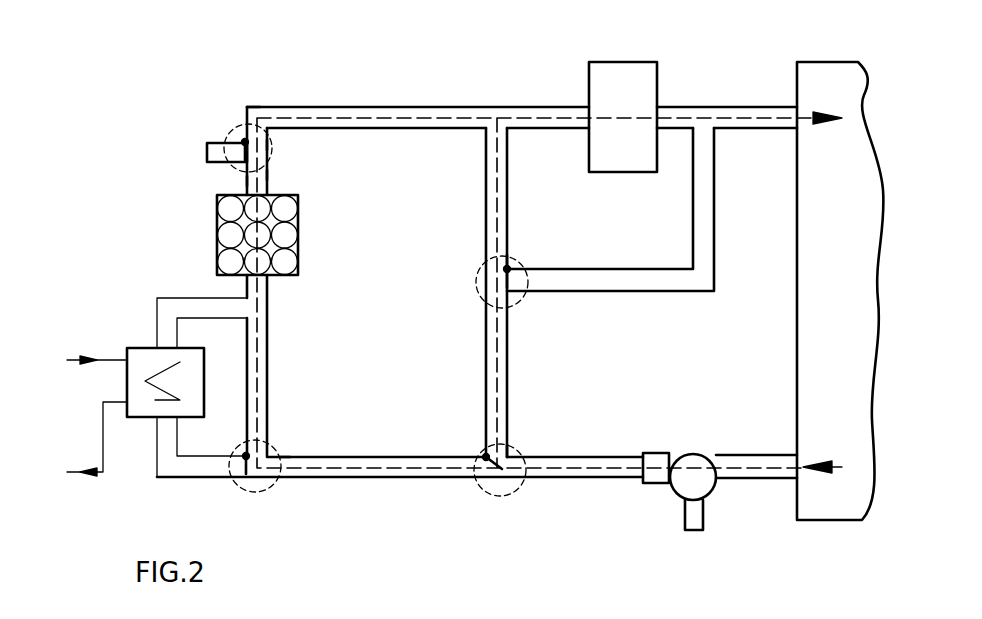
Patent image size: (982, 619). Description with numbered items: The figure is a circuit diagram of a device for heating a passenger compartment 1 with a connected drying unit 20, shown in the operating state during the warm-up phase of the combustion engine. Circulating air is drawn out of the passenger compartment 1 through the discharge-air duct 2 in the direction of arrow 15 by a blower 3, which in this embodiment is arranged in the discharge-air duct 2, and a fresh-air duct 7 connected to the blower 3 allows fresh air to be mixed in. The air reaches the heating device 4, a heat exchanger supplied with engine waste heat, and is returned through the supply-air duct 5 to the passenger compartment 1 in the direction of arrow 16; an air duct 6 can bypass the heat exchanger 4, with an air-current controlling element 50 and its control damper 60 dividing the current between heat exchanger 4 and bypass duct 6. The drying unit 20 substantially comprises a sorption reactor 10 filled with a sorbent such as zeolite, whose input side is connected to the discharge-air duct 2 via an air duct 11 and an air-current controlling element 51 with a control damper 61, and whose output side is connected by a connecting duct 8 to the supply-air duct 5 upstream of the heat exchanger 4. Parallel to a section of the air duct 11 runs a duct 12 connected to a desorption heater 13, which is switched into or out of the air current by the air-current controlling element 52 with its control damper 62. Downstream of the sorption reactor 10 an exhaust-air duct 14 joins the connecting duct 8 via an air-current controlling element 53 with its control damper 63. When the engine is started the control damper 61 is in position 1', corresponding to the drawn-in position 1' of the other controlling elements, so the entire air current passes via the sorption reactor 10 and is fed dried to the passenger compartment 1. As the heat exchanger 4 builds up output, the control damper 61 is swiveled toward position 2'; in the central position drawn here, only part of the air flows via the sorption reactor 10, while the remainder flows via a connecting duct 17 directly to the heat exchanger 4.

The passenger compartment 1 is at (825, 291).
The discharge-air duct 2 is at (720, 450).
The blower 3 is at (697, 468).
The heating device 4 is at (589, 92).
The supply-air duct 5 is at (726, 107).
The air duct 6 is at (645, 291).
The fresh-air duct 7 is at (703, 515).
The connecting duct 8 is at (386, 107).
The sorption reactor 10 is at (298, 237).
The air duct 11 is at (270, 390).
The duct 12 is at (178, 477).
The desorption heater 13 is at (143, 357).
The exhaust-air duct 14 is at (207, 152).
The arrow 15 is at (838, 467).
The arrow 16 is at (807, 128).
The connecting duct 17 is at (487, 336).
The drying unit 20 is at (202, 124).
The air-current controlling element 50 is at (512, 264).
The air-current controlling element 51 is at (520, 448).
The air-current controlling element 52 is at (283, 448).
The air-current controlling element 53 is at (282, 176).
The control damper 60 is at (518, 300).
The control damper 61 is at (497, 498).
The control damper 62 is at (262, 490).
The control damper 63 is at (238, 140).
The position 1' is at (374, 336).
The position 2' is at (374, 319).